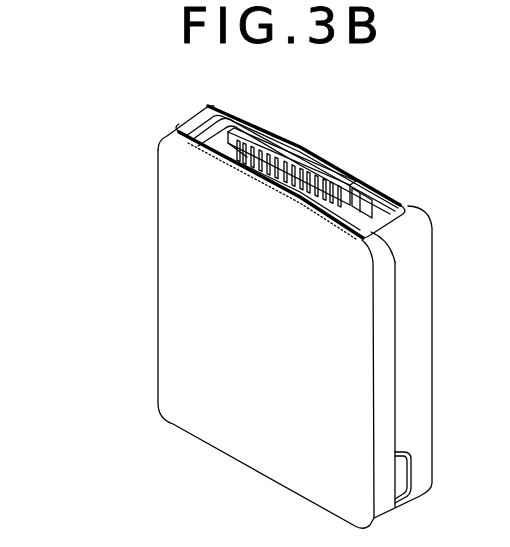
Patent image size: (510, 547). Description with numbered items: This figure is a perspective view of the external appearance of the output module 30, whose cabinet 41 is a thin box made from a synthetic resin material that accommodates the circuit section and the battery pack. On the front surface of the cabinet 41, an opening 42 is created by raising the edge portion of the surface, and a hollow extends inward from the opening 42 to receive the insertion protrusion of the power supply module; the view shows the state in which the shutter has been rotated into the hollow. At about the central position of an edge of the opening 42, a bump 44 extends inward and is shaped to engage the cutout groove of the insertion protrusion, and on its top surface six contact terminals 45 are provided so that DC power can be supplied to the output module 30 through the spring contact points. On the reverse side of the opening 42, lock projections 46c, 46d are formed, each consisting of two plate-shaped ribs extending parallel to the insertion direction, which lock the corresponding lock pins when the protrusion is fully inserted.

The output module 30 is at (78, 117).
The cabinet 41 is at (157, 258).
The opening 42 is at (188, 120).
The bump 44 is at (314, 162).
The contact terminals 45 is at (328, 172).
The lock projection 46c is at (252, 115).
The lock projection 46d is at (392, 190).